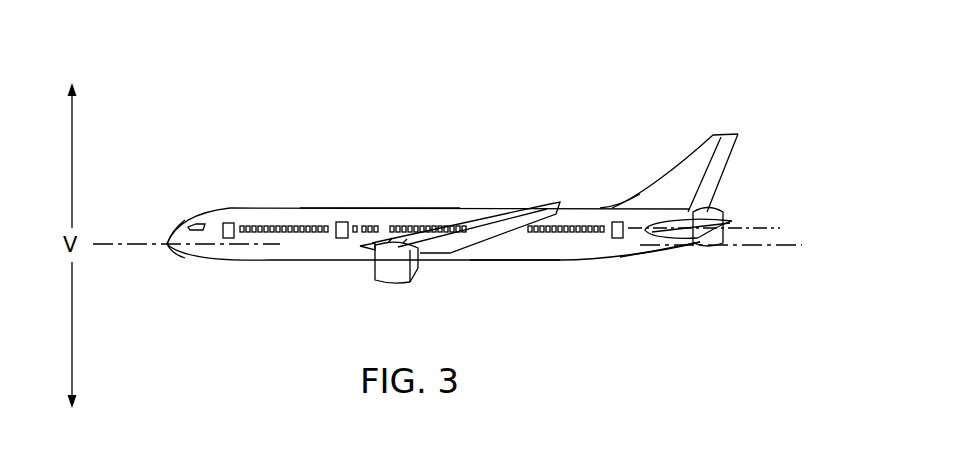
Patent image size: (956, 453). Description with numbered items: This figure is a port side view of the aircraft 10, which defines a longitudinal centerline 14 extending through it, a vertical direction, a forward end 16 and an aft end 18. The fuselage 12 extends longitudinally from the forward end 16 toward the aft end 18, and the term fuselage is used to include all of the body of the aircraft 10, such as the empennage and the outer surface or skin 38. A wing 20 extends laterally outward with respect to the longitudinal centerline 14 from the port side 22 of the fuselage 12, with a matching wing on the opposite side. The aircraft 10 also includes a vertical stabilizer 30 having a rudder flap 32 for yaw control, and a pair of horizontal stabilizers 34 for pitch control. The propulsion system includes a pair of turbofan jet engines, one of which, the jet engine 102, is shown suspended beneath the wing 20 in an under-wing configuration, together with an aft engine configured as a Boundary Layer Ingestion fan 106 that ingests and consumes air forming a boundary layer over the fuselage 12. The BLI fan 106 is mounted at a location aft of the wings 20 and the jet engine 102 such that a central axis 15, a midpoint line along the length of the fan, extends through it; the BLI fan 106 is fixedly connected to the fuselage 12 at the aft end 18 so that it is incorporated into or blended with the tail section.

The aircraft 10 is at (213, 175).
The fuselage 12 is at (228, 242).
The longitudinal centerline 14 is at (110, 246).
The central axis 15 is at (623, 202).
The forward end 16 is at (168, 256).
The aft end 18 is at (665, 260).
The wings 20 is at (445, 245).
The port side 22 is at (548, 262).
The vertical stabilizer 30 is at (697, 165).
The rudder flap 32 is at (723, 160).
The horizontal stabilizers 34 is at (690, 242).
The outer surface or skin 38 is at (382, 193).
The turbofan jet engine 102 is at (384, 283).
The Boundary Layer Ingestion (BLI) fan 106 is at (727, 201).